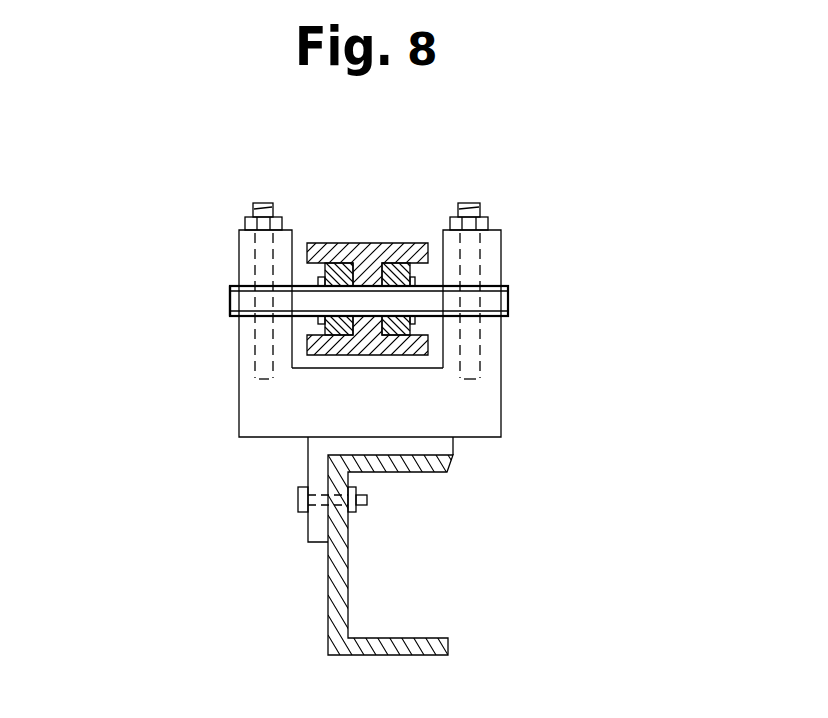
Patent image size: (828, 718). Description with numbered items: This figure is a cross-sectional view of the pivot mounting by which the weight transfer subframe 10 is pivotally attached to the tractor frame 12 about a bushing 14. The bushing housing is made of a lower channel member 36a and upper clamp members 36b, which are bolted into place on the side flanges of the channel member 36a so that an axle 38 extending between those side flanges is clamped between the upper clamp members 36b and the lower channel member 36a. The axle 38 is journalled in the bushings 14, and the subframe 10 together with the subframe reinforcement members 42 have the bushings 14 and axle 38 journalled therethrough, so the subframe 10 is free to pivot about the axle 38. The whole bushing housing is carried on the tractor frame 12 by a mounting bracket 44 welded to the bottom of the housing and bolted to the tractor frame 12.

The subframe 10 is at (363, 252).
The tractor frame 12 is at (337, 575).
The bushing 14 is at (245, 284).
The lower channel member 36a is at (480, 396).
The upper clamp members 36b is at (247, 240).
The axle 38 is at (251, 297).
The subframe reinforcement members 42 is at (397, 278).
The mounting bracket 44 is at (317, 462).